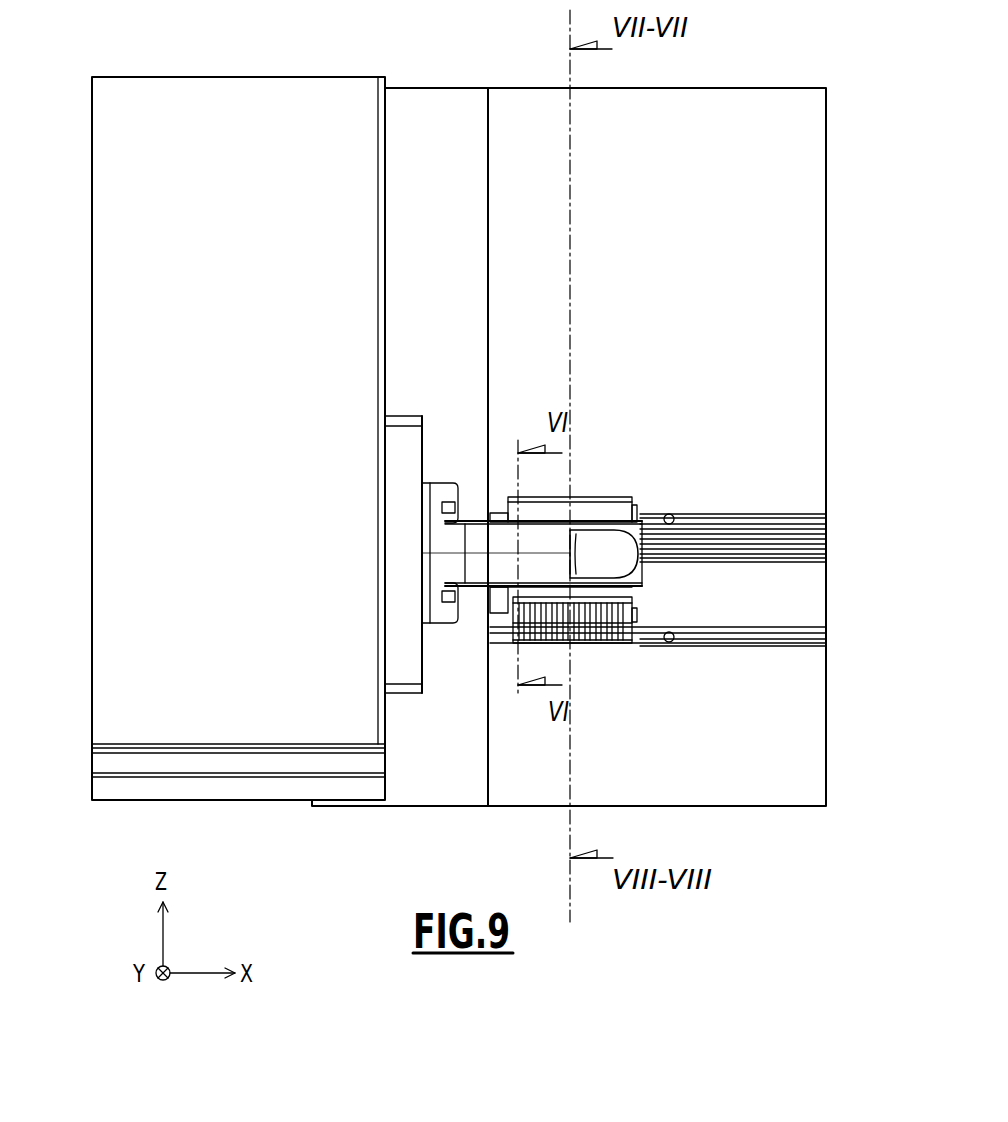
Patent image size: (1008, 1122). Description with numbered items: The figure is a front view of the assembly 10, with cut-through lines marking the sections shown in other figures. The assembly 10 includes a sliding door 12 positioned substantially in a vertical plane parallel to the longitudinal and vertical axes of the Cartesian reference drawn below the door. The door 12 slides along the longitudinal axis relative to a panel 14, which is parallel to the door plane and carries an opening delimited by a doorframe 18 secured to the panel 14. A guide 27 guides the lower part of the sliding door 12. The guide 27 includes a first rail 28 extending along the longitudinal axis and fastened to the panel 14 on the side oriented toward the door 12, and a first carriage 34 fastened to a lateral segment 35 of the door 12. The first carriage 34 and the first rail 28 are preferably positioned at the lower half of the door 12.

The assembly 10 is at (459, 430).
The sliding door 12 is at (125, 507).
The panel 14 is at (800, 273).
The doorframe 18 is at (428, 98).
The guide 27 is at (770, 703).
The first rail 28 is at (800, 598).
The first carriage 34 is at (613, 468).
The lateral segment 35 is at (387, 721).